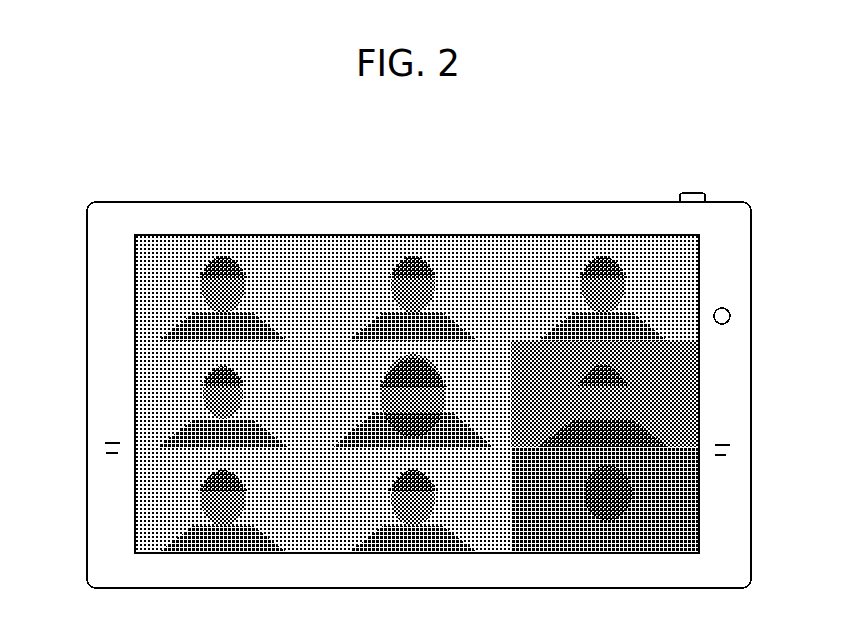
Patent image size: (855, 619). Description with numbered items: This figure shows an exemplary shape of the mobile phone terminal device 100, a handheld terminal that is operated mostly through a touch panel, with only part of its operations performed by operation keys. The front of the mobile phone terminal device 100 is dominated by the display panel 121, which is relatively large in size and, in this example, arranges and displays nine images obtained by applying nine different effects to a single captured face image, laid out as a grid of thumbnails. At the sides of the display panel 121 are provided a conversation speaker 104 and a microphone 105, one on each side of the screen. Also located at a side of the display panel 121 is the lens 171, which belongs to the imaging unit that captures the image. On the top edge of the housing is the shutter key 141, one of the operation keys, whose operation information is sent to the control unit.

The mobile phone terminal device 100 is at (518, 194).
The display panel 121 is at (618, 225).
The shutter key 141 is at (692, 187).
The lens 171 is at (722, 292).
The conversation speaker 104 is at (717, 452).
The microphone 105 is at (110, 450).